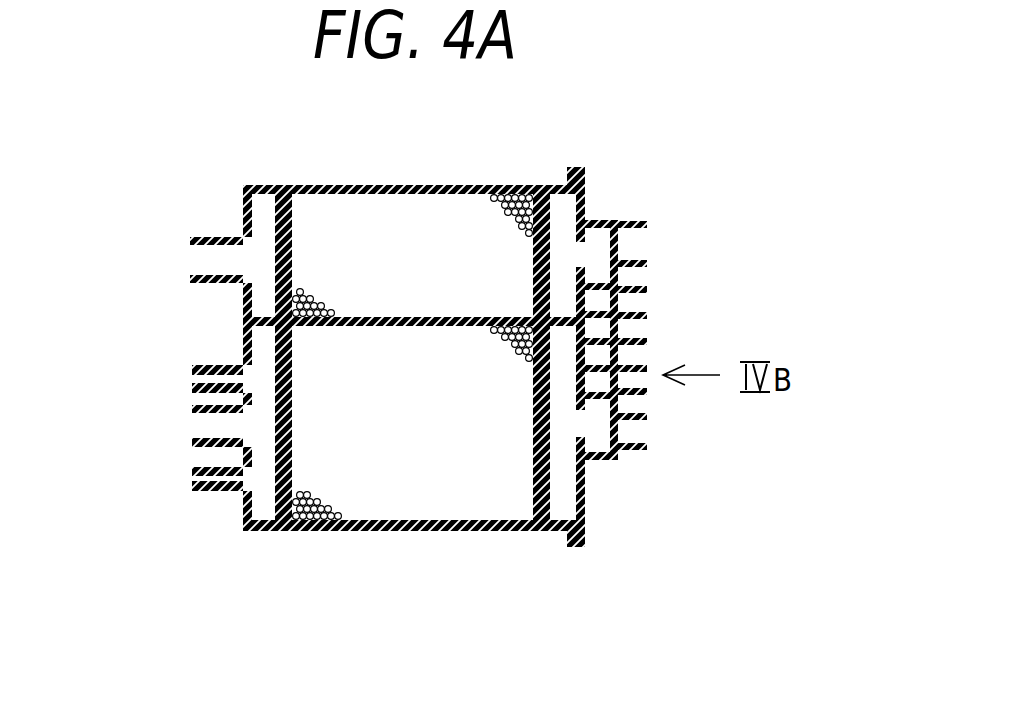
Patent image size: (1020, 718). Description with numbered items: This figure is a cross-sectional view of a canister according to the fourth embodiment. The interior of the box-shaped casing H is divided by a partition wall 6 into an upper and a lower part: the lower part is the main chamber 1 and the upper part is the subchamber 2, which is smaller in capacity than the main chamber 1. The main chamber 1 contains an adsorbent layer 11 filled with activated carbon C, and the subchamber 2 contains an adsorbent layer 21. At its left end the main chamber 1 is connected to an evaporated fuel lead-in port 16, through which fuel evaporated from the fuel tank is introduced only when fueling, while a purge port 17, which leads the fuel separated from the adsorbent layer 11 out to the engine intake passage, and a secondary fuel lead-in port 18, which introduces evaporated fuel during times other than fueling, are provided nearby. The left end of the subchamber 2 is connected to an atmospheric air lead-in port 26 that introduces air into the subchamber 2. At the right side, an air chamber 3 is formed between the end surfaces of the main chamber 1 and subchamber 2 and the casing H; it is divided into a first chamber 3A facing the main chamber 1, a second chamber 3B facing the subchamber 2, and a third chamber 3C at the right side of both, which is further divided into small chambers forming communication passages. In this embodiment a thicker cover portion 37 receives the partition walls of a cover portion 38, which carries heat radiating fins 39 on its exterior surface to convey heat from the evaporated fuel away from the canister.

The main chamber 1 is at (397, 531).
The subchamber 2 is at (285, 186).
The air chamber 3 is at (618, 328).
The first chamber 3A is at (567, 472).
The second chamber 3B is at (558, 208).
The third chamber 3C is at (593, 255).
The partition wall 6 is at (255, 305).
The adsorbent layer 11 is at (440, 445).
The evaporated fuel lead-in port 16 is at (200, 420).
The purge port 17 is at (200, 476).
The secondary fuel lead-in port 18 is at (200, 380).
The adsorbent layer 21 is at (422, 240).
The atmospheric air lead-in port 26 is at (202, 257).
The cover portion 37 is at (585, 512).
The cover portion 38 is at (600, 221).
The heat radiating fins 39 is at (647, 290).
The activated carbon C is at (293, 532).
The casing H is at (548, 544).